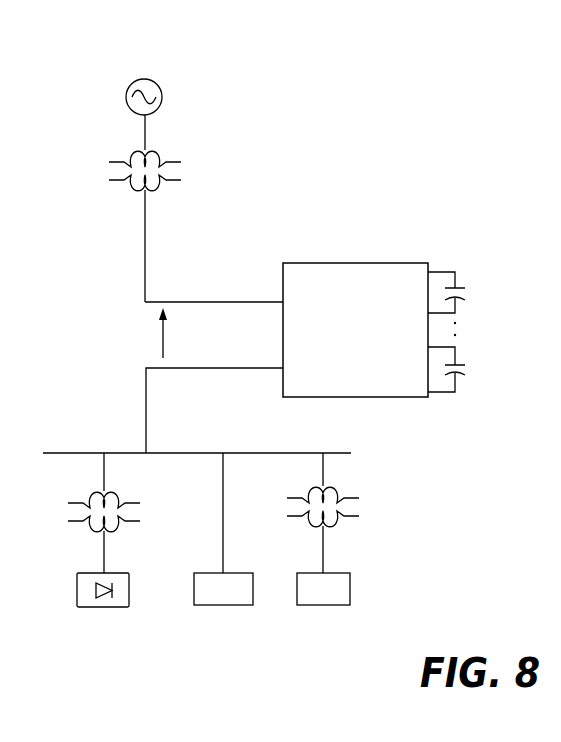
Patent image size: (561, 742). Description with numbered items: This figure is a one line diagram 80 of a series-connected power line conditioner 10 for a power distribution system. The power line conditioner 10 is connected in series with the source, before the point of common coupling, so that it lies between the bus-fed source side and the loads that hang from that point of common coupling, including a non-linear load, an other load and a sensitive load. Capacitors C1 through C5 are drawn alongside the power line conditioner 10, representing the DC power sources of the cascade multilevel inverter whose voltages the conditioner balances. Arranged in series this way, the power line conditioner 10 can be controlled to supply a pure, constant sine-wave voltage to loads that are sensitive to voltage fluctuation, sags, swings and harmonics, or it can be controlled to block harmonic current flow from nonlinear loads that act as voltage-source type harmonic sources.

The one line diagram 80 is at (340, 135).
The power line conditioner 10 is at (376, 263).
The capacitor C1 is at (455, 299).
The capacitor C5 is at (456, 378).